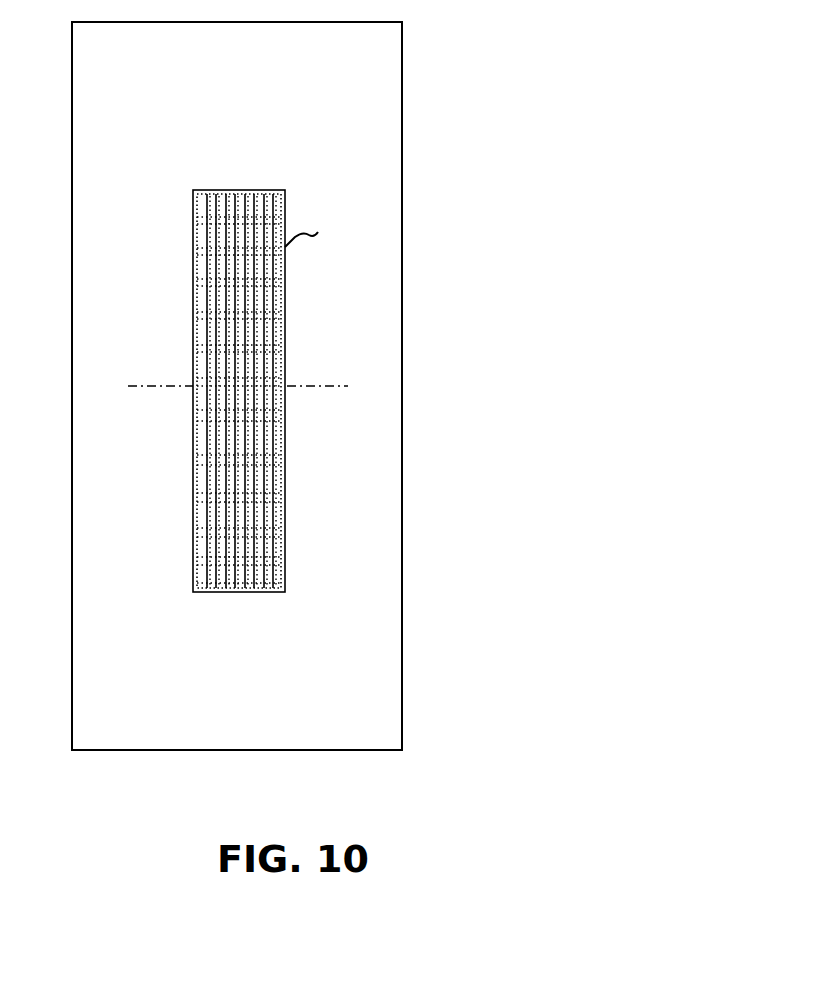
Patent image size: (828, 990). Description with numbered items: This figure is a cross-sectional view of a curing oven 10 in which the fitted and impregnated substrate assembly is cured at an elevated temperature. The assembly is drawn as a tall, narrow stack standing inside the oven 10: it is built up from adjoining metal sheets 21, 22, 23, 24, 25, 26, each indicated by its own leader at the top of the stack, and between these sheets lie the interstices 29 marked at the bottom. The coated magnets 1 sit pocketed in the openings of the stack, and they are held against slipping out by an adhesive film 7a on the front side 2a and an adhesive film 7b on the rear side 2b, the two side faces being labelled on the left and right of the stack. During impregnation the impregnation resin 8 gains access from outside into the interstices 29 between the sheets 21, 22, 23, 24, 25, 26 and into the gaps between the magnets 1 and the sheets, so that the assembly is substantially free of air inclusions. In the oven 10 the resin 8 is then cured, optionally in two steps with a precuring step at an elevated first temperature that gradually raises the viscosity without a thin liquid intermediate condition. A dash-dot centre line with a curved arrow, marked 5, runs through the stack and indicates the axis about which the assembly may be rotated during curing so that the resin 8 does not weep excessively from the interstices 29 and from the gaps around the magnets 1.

The magnets 1 is at (285, 478).
The front side 2a is at (196, 310).
The rear side 2b is at (285, 312).
The axis of rotation 5 is at (314, 408).
The adhesive film 7a is at (196, 253).
The adhesive film 7b is at (319, 228).
The impregnation resin 8 is at (268, 592).
The curing oven 10 is at (402, 688).
The metal sheet 21 is at (202, 197).
The metal sheet 22 is at (220, 197).
The metal sheet 23 is at (237, 197).
The metal sheet 24 is at (248, 197).
The metal sheet 25 is at (263, 197).
The metal sheet 26 is at (278, 197).
The interstices 29 is at (209, 592).